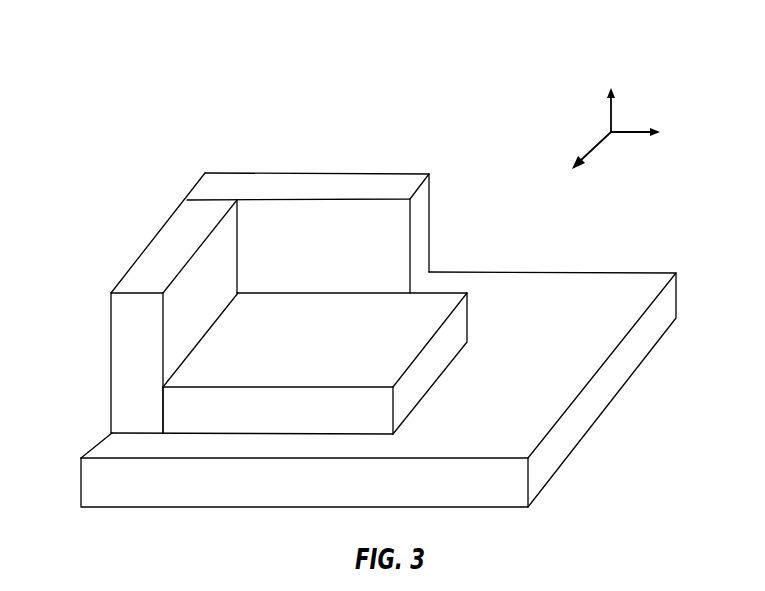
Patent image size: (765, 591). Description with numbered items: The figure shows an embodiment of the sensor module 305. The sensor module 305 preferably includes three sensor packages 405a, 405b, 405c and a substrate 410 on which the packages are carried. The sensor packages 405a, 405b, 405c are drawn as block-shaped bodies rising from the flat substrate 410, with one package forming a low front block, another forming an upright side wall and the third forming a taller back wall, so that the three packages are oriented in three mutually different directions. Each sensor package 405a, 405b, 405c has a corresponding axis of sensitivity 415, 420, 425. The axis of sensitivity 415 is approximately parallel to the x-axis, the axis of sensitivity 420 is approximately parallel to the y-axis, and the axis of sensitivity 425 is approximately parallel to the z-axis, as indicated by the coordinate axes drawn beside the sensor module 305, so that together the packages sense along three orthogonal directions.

The sensor module 305 is at (116, 44).
The sensor package 405a is at (122, 362).
The sensor package 405b is at (215, 420).
The sensor package 405c is at (357, 182).
The substrate 410 is at (90, 492).
The axis of sensitivity 415 is at (202, 320).
The axis of sensitivity 420 is at (435, 307).
The axis of sensitivity 425 is at (316, 272).